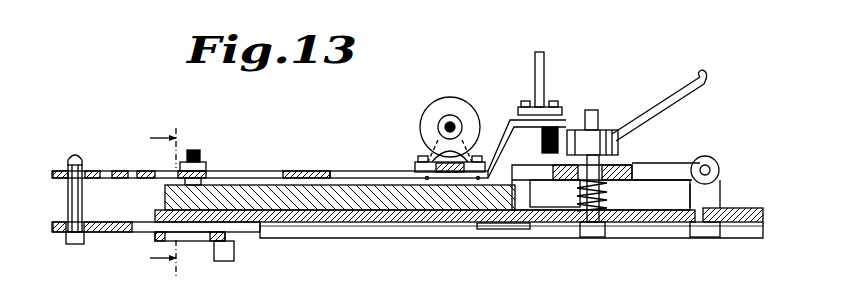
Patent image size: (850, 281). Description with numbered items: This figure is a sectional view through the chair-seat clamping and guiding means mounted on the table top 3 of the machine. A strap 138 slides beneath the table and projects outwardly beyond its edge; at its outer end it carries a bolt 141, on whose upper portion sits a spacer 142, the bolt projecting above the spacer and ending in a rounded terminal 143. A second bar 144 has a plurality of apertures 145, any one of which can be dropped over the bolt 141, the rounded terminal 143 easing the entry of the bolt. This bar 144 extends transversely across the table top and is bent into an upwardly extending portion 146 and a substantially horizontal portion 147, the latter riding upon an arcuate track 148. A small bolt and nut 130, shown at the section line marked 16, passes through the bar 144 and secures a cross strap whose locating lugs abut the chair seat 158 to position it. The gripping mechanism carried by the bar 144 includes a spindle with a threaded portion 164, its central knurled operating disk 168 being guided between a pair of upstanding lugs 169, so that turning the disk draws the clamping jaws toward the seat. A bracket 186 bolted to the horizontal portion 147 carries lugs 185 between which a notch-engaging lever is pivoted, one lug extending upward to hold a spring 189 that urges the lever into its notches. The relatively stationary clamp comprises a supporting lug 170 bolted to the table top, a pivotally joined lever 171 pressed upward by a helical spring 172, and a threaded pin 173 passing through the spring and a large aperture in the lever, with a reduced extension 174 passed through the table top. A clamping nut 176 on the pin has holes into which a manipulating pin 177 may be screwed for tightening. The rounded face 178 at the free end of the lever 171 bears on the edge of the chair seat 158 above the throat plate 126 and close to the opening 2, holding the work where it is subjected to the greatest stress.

The opening 2 is at (505, 225).
The table top 3 is at (748, 208).
The section line 16 is at (192, 202).
The throat plate 126 is at (523, 230).
The bolt 130 is at (204, 160).
The strap 138 is at (136, 232).
The bolt 141 is at (72, 244).
The spacer 142 is at (86, 200).
The rounded terminal 143 is at (77, 158).
The second bar 144 is at (263, 170).
The apertures 145 is at (111, 170).
The upwardly extending portion 146 is at (500, 148).
The horizontal portion 147 is at (582, 127).
The arcuate track 148 is at (556, 136).
The chair seat 158 is at (347, 210).
The threaded portion 164 is at (440, 124).
The knurled operating disk 168 is at (446, 98).
The lugs 169 is at (450, 153).
The supporting lug 170 is at (713, 195).
The lever 171 is at (712, 158).
The helical spring 172 is at (610, 196).
The threaded pin 173 is at (632, 118).
The reduced extension 174 is at (578, 218).
The clamping nut 176 is at (665, 162).
The manipulating pin 177 is at (705, 72).
The rounded face 178 is at (555, 194).
The lugs 185 is at (546, 72).
The bracket 186 is at (560, 106).
The spring 189 is at (511, 251).